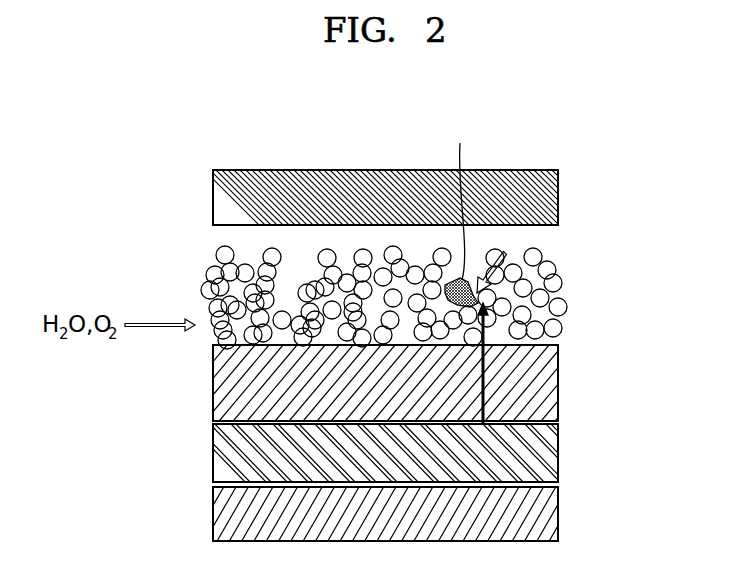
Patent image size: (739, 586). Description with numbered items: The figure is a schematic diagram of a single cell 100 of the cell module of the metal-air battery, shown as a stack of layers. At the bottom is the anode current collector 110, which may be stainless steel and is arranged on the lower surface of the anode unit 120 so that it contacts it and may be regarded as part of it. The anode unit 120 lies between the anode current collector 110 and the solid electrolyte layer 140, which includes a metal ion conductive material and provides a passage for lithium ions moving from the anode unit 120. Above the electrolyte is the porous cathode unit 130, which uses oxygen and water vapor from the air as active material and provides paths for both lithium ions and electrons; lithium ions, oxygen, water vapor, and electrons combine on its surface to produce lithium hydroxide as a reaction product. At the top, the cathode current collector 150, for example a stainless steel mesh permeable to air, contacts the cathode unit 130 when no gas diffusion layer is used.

The cell 100 is at (588, 136).
The anode current collector 110 is at (558, 513).
The anode unit 120 is at (558, 453).
The cathode unit 130 is at (556, 318).
The solid electrolyte layer 140 is at (558, 382).
The cathode current collector 150 is at (558, 198).